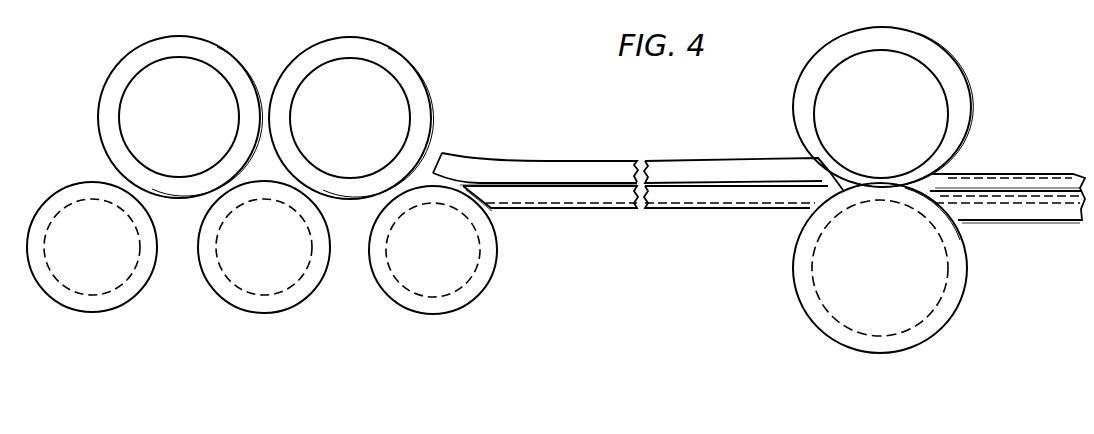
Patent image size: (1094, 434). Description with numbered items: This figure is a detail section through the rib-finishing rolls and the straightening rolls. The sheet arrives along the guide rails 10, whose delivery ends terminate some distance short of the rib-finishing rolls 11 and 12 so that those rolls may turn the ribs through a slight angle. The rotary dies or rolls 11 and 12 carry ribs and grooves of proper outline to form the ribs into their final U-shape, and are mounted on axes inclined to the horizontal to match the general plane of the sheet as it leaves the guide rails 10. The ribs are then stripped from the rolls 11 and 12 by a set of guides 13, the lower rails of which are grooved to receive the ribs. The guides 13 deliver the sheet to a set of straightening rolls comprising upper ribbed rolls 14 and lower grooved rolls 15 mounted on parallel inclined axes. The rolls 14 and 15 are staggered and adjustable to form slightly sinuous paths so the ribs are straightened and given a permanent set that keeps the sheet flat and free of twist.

The guide rails 10 is at (1021, 180).
The rib-finishing roll 11 is at (942, 113).
The rib-finishing roll 12 is at (940, 270).
The guides 13 is at (680, 173).
The upper ribbed rolls 14 is at (215, 92).
The lower grooved rolls 15 is at (238, 280).